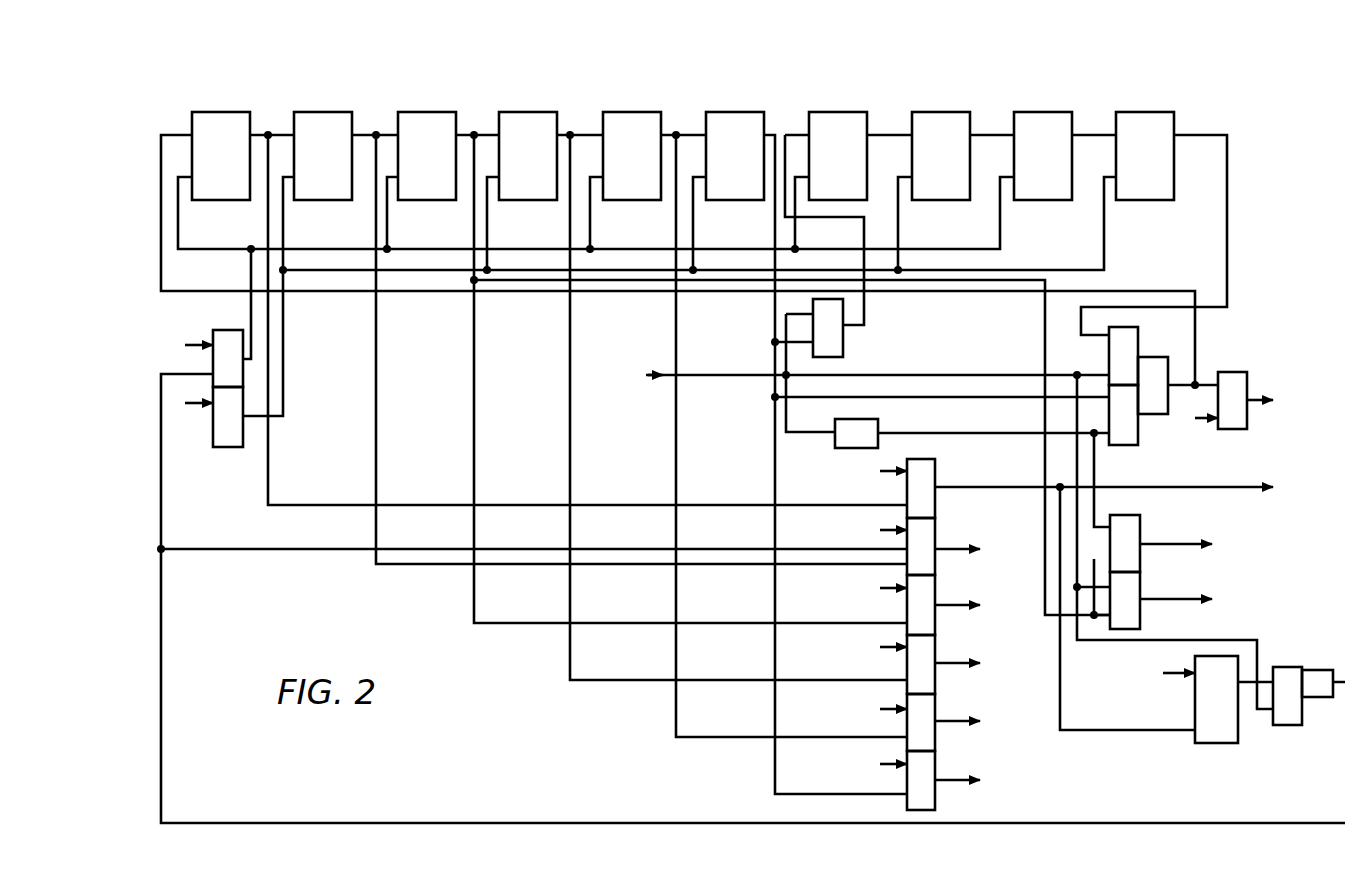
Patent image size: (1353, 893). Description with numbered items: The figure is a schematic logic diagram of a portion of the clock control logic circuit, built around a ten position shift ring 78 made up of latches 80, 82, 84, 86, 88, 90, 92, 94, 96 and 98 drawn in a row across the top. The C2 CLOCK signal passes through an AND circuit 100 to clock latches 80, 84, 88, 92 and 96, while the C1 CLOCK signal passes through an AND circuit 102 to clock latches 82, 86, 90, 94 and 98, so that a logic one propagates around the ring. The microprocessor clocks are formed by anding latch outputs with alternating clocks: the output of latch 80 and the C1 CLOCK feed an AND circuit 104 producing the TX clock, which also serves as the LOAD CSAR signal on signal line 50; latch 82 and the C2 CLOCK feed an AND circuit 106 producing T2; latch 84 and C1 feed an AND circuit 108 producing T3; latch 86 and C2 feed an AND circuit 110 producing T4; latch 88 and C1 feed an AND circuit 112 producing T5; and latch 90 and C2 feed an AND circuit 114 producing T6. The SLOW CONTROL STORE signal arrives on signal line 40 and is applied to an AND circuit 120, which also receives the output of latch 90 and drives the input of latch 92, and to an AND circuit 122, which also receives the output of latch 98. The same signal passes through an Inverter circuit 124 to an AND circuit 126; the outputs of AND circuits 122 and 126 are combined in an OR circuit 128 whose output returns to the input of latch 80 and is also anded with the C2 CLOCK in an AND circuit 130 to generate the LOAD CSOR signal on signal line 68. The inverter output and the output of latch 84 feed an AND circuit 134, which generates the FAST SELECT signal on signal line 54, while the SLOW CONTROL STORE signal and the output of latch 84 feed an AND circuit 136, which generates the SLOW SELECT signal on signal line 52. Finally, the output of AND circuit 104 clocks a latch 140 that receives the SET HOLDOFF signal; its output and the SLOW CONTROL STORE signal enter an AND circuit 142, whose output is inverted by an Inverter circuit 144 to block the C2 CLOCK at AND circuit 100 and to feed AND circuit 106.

The shift ring 78 is at (183, 123).
The latch 80 is at (240, 126).
The latch 82 is at (342, 126).
The latch 84 is at (446, 126).
The latch 86 is at (547, 126).
The latch 88 is at (651, 126).
The latch 90 is at (754, 126).
The latch 92 is at (857, 126).
The latch 94 is at (960, 126).
The latch 96 is at (1062, 126).
The latch 98 is at (1164, 126).
The AND circuit 100 is at (229, 328).
The AND circuit 102 is at (231, 442).
The AND circuit 104 is at (922, 476).
The AND circuit 106 is at (924, 534).
The AND circuit 108 is at (924, 592).
The AND circuit 110 is at (924, 651).
The AND circuit 112 is at (924, 709).
The AND circuit 114 is at (924, 767).
The AND circuit 120 is at (834, 343).
The AND circuit 122 is at (1128, 336).
The Inverter circuit 124 is at (877, 428).
The AND circuit 126 is at (1125, 434).
The OR circuit 128 is at (1152, 370).
The AND circuit 130 is at (1233, 380).
The AND circuit 134 is at (1123, 523).
The AND circuit 136 is at (1130, 618).
The latch 140 is at (1225, 740).
The AND circuit 142 is at (1284, 670).
The Inverter circuit 144 is at (1318, 672).
The signal line 40 is at (756, 371).
The signal line 50 is at (1224, 485).
The signal line 52 is at (1178, 597).
The signal line 54 is at (1174, 542).
The signal line 68 is at (1257, 395).